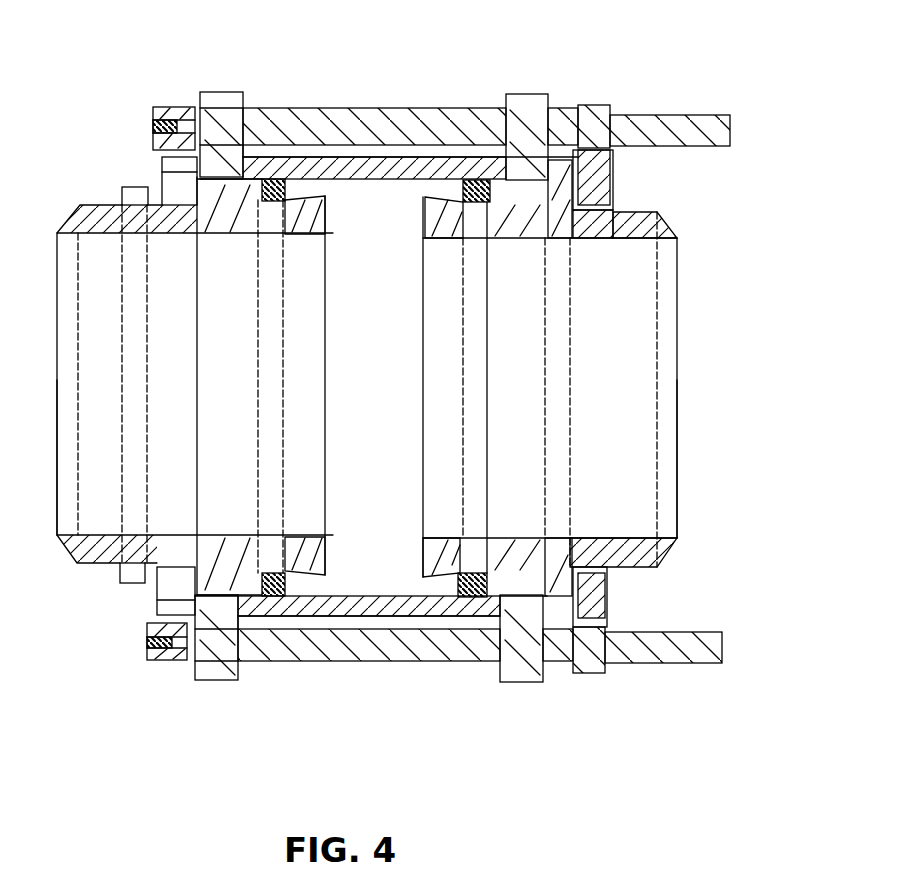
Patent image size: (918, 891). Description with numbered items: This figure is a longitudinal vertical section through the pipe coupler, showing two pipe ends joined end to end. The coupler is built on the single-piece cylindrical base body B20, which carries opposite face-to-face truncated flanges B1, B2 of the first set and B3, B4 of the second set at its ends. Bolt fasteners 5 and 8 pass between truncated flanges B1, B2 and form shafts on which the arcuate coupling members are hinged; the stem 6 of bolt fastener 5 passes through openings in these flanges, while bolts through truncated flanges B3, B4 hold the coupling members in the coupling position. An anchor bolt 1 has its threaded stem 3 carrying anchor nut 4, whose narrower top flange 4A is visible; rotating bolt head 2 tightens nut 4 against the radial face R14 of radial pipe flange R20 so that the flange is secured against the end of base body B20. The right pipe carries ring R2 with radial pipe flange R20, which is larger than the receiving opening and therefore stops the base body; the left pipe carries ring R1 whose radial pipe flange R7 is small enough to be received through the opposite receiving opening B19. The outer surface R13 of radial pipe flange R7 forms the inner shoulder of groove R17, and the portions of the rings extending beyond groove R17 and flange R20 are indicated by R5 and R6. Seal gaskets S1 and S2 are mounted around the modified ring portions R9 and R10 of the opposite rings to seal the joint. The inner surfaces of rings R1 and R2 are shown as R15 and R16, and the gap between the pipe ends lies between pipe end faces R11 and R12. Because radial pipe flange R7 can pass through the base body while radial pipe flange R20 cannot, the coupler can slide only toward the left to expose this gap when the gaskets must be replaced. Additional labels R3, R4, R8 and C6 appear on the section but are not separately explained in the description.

The bolt 1 is at (338, 130).
The bolt head 2 is at (187, 130).
The stem 3 is at (648, 130).
The anchor nut 4 is at (600, 168).
The top flange 4A is at (600, 107).
The bolt fastener 5 is at (385, 637).
The stem 6 is at (153, 647).
The bolt fastener 8 is at (653, 662).
The truncated flange B1 is at (203, 95).
The truncated flange B2 is at (521, 92).
The truncated flange B3 is at (213, 680).
The truncated flange B4 is at (520, 683).
The receiving opening B19 is at (337, 597).
The cylindrical base body B20 is at (408, 158).
The clamp block C6 is at (162, 172).
The ring R1 is at (97, 618).
The ring R2 is at (678, 598).
The ring R3 is at (77, 560).
The ring R4 is at (672, 230).
The extended ring portion R5 is at (123, 190).
The extended ring portion R6 is at (637, 547).
The radial pipe flange R7 is at (222, 192).
The ring R8 is at (520, 200).
The modified ring portion R9 is at (312, 534).
The modified ring portion R10 is at (440, 577).
The pipe end face R11 is at (326, 215).
The pipe end face R12 is at (425, 218).
The outer surface R13 is at (204, 218).
The radial face R14 is at (580, 225).
The inner surface R15 is at (112, 235).
The inner surface R16 is at (600, 240).
The shoulder groove R17 is at (150, 207).
The radial pipe flange R20 is at (557, 585).
The seal gasket S1 is at (272, 205).
The seal gasket S2 is at (490, 215).